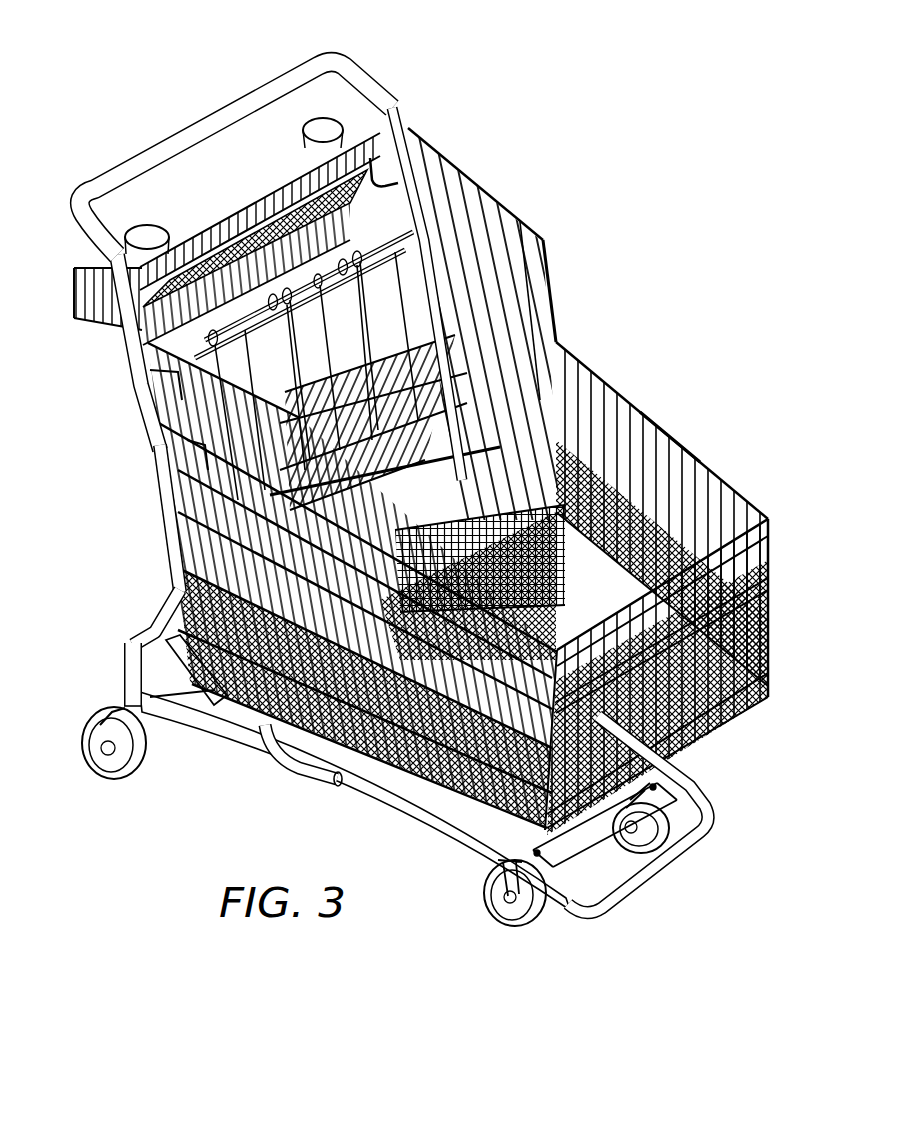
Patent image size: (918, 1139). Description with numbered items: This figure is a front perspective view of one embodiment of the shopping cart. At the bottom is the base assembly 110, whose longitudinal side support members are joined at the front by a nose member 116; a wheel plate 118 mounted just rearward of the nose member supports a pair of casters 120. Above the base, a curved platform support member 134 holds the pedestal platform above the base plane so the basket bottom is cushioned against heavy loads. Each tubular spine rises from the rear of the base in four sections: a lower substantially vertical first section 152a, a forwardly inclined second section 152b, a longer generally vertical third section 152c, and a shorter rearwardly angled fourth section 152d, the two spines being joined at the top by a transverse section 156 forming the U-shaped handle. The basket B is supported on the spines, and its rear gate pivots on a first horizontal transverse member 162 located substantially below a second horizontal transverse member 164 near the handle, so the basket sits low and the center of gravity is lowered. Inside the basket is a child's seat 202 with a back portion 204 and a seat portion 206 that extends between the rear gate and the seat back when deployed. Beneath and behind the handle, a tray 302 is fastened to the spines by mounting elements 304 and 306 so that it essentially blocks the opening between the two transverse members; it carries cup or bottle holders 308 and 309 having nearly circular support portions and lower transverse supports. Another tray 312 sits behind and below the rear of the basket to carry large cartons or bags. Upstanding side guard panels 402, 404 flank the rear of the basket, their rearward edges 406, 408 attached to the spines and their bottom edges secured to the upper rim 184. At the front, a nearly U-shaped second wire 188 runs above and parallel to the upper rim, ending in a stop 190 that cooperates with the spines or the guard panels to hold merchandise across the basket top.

The base assembly 110 is at (403, 810).
The nose member 116 is at (607, 887).
The wheel plate 118 is at (573, 833).
The casters 120 is at (517, 927).
The platform support member 134 is at (303, 763).
The first section of spine member 152a is at (125, 685).
The second section of spine member 152b is at (148, 627).
The third section of spine member 152c is at (177, 567).
The fourth section of spine member 152d is at (87, 233).
The transverse section 156 is at (197, 113).
The first horizontal transverse member 162 is at (317, 277).
The second horizontal transverse member 164 is at (377, 133).
The upper rim 184 is at (617, 395).
The second wire 188 is at (730, 477).
The stop 190 is at (677, 443).
The child's seat 202 is at (400, 410).
The back portion 204 is at (432, 330).
The seat portion 206 is at (290, 393).
The tray 302 is at (108, 345).
The mounting element 304 is at (378, 240).
The mounting element 306 is at (380, 135).
The cup or bottle holder 308 is at (133, 213).
The cup or bottle holder 309 is at (313, 113).
The tray 312 is at (200, 707).
The side guard panel 402 is at (187, 440).
The side guard panel 404 is at (445, 215).
The rearward edge of side guard panel 406 is at (150, 370).
The rearward edge of side guard panel 408 is at (410, 215).
The basket B is at (780, 633).